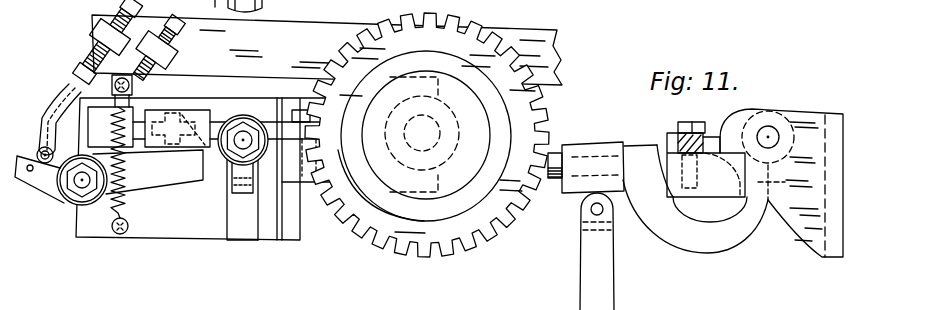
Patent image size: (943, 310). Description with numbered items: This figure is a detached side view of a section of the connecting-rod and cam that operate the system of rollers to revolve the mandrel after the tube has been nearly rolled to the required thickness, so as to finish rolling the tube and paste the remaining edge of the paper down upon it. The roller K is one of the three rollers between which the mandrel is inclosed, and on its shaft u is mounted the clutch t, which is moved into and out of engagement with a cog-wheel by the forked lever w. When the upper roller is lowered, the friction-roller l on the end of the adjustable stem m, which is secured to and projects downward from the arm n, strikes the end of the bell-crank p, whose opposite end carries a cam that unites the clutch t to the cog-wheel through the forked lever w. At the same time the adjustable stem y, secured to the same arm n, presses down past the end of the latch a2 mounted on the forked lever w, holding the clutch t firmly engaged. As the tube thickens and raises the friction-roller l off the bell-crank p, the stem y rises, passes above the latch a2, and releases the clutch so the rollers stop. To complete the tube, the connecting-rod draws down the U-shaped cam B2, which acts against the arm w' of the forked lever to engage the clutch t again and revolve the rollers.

The arm n is at (327, 50).
The roller K is at (427, 135).
The clutch t is at (424, 136).
The shaft u is at (422, 134).
The forked lever w is at (345, 140).
The arm of the forked lever w' is at (304, 140).
The latch a2 is at (110, 170).
The adjustable stem y is at (131, 91).
The adjustable stem m is at (52, 119).
The friction-roller l is at (51, 153).
The bell-crank p is at (148, 180).
The U-shaped cam B2 is at (695, 199).